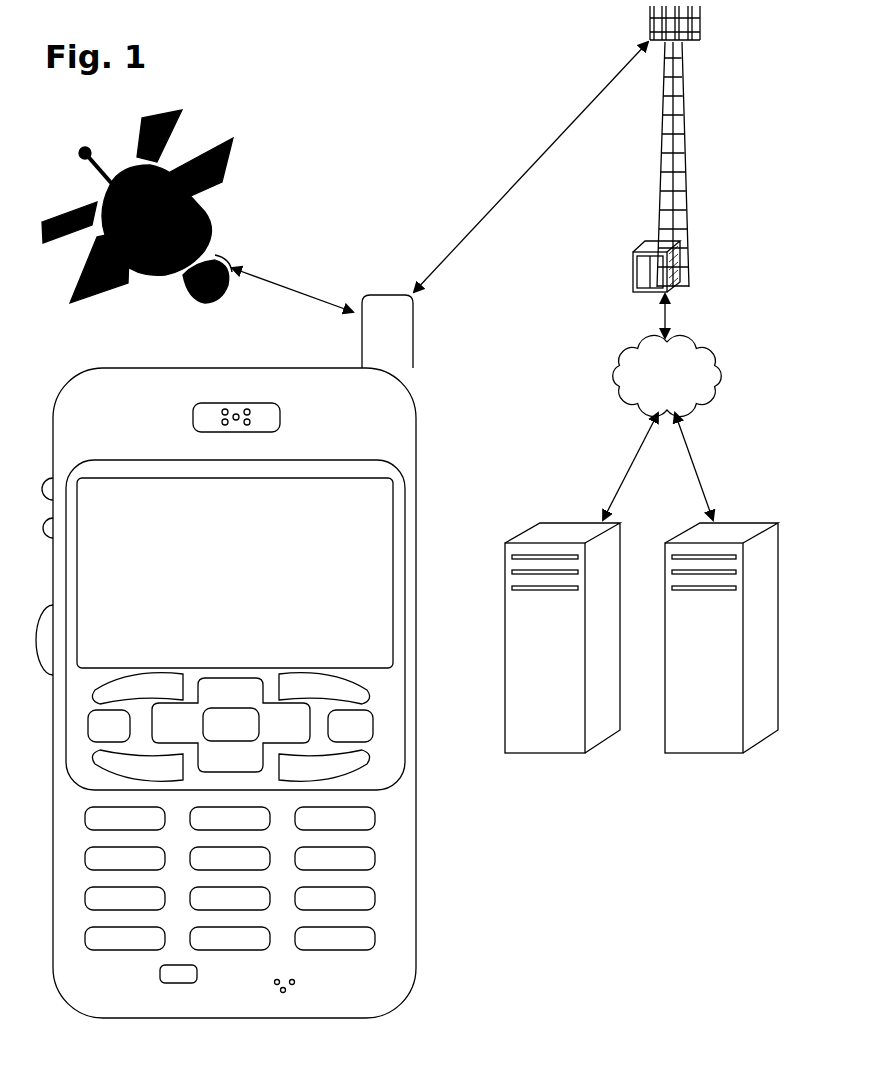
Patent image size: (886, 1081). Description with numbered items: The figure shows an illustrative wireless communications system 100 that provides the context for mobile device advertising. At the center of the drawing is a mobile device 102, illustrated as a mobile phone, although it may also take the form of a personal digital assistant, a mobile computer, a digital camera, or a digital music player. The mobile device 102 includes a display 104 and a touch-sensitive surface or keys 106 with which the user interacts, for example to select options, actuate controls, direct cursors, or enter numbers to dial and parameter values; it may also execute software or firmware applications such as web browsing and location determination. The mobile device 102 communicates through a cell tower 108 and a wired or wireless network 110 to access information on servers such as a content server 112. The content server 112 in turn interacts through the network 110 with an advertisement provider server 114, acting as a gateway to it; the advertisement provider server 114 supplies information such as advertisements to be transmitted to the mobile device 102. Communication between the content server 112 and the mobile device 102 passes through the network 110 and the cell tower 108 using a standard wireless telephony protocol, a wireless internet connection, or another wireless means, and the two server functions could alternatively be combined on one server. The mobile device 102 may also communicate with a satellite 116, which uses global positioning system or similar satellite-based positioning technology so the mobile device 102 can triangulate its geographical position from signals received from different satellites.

The wireless communications system 100 is at (407, 525).
The mobile device 102 is at (93, 1018).
The display 104 is at (383, 510).
The keys 106 is at (419, 672).
The cell tower 108 is at (662, 163).
The network 110 is at (618, 388).
The content server 112 is at (505, 755).
The advertisement provider server 114 is at (665, 755).
The satellite 116 is at (216, 235).